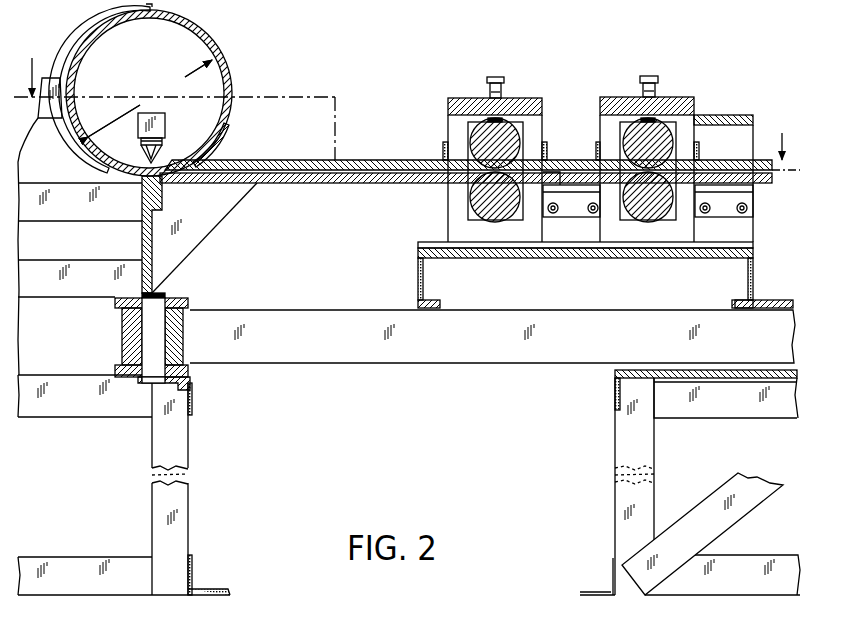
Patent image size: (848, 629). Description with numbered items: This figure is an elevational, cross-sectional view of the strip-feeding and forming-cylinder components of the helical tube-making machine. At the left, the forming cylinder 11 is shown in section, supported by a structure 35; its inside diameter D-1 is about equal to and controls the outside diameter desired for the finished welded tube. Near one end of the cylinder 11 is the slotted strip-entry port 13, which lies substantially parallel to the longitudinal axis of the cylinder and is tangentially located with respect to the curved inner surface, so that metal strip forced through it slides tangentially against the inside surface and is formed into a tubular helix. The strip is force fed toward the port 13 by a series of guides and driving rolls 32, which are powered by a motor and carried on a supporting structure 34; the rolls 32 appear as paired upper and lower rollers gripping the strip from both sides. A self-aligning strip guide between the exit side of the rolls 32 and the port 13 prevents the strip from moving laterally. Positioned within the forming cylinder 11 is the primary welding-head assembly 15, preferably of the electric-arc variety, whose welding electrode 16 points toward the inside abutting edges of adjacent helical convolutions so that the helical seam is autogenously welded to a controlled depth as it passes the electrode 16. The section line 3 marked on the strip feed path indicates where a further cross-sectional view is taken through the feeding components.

The section line 3- 3 is at (408, 114).
The forming cylinder 11 is at (218, 52).
The slotted strip-entry port 13 is at (162, 173).
The primary welding-head assembly 15 is at (166, 126).
The welding electrode 16 is at (146, 168).
The driving rolls 32 is at (473, 138).
The supporting structure 34 is at (628, 453).
The supporting structure 35 is at (180, 456).
The inside diameter D-1 is at (150, 98).